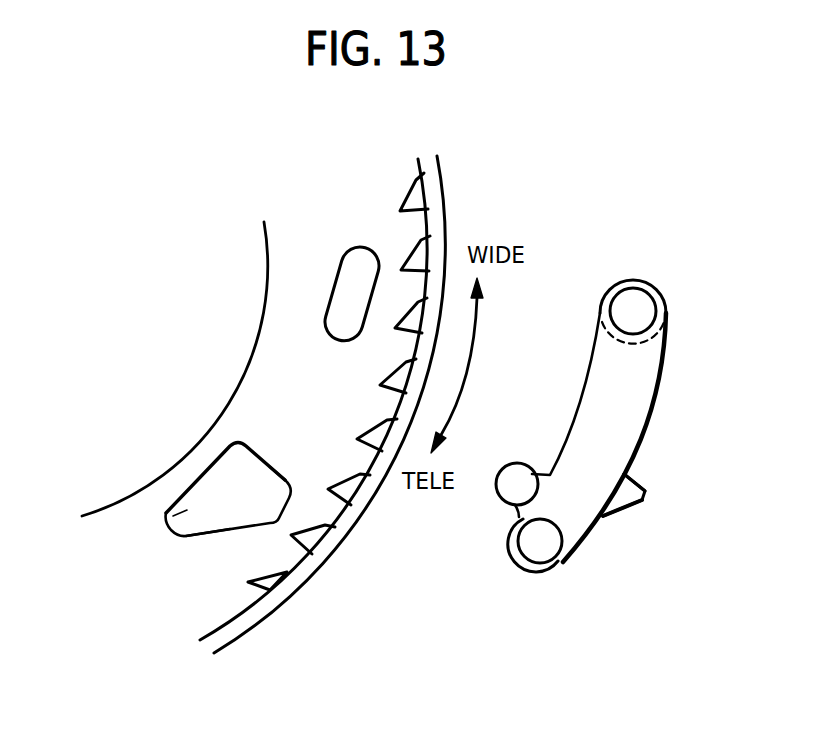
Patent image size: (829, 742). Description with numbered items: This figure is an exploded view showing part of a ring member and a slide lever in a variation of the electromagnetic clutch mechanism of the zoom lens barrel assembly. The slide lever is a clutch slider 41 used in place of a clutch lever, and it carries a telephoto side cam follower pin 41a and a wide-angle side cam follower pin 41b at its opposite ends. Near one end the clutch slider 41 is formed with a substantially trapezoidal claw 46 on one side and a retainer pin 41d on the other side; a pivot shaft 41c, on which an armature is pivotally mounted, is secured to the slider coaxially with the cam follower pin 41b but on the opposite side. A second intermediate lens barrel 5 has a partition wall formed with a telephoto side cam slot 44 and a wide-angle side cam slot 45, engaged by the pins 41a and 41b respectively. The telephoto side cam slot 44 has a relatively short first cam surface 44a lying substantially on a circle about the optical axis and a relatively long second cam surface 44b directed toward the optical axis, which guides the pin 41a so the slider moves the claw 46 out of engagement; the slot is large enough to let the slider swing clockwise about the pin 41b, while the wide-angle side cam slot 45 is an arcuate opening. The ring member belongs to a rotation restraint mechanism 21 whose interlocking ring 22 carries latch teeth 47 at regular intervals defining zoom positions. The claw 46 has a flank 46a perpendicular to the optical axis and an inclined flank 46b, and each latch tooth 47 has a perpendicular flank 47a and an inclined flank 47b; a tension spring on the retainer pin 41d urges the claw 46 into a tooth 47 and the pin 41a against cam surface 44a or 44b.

The second intermediate lens barrel 5 is at (233, 392).
The rotation restraint mechanism 21 is at (266, 645).
The interlocking ring 22 is at (361, 507).
The clutch slider 41 is at (664, 421).
The telephoto side cam follower pin 41a is at (545, 546).
The wide-angle side cam follower pin 41b is at (645, 312).
The pivot shaft 41c is at (632, 346).
The retainer pin 41d is at (517, 478).
The telephoto side cam slot 44 is at (163, 525).
The first cam surface 44a is at (291, 484).
The second cam surface 44b is at (197, 530).
The wide-angle side cam slot 45 is at (345, 261).
The trapezoidal claw 46 is at (661, 512).
The flank 46a is at (645, 479).
The flank 46b is at (627, 507).
The latch teeth 47 is at (280, 570).
The flank 47a is at (258, 588).
The flank 47b is at (272, 579).